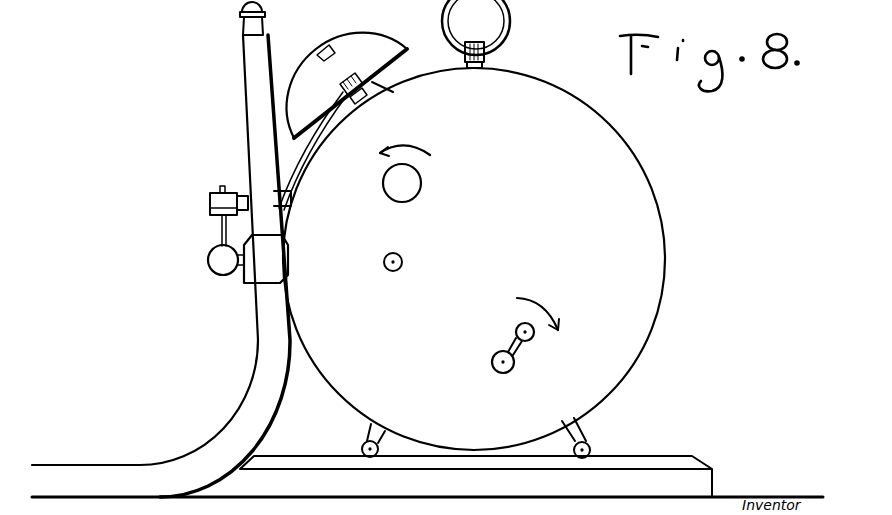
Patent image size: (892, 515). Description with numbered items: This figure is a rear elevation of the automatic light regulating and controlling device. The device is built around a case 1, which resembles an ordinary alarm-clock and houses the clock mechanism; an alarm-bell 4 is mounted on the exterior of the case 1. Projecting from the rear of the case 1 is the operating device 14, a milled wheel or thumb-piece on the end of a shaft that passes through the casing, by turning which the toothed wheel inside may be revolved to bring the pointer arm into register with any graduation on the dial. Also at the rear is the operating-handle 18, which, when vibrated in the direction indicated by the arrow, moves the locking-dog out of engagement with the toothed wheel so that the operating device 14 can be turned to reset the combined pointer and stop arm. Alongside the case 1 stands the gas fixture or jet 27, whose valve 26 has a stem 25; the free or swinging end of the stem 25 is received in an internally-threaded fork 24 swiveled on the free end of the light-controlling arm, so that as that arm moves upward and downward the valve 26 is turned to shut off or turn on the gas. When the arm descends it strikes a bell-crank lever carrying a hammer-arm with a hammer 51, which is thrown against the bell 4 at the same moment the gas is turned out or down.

The case 1 is at (628, 190).
The alarm-bell 4 is at (366, 52).
The operating device 14 is at (418, 188).
The operating-handle 18 is at (512, 345).
The fork 24 is at (209, 200).
The stem 25 is at (220, 230).
The valve 26 is at (252, 268).
The gas fixture or jet 27 is at (245, 68).
The hammer 51 is at (358, 151).